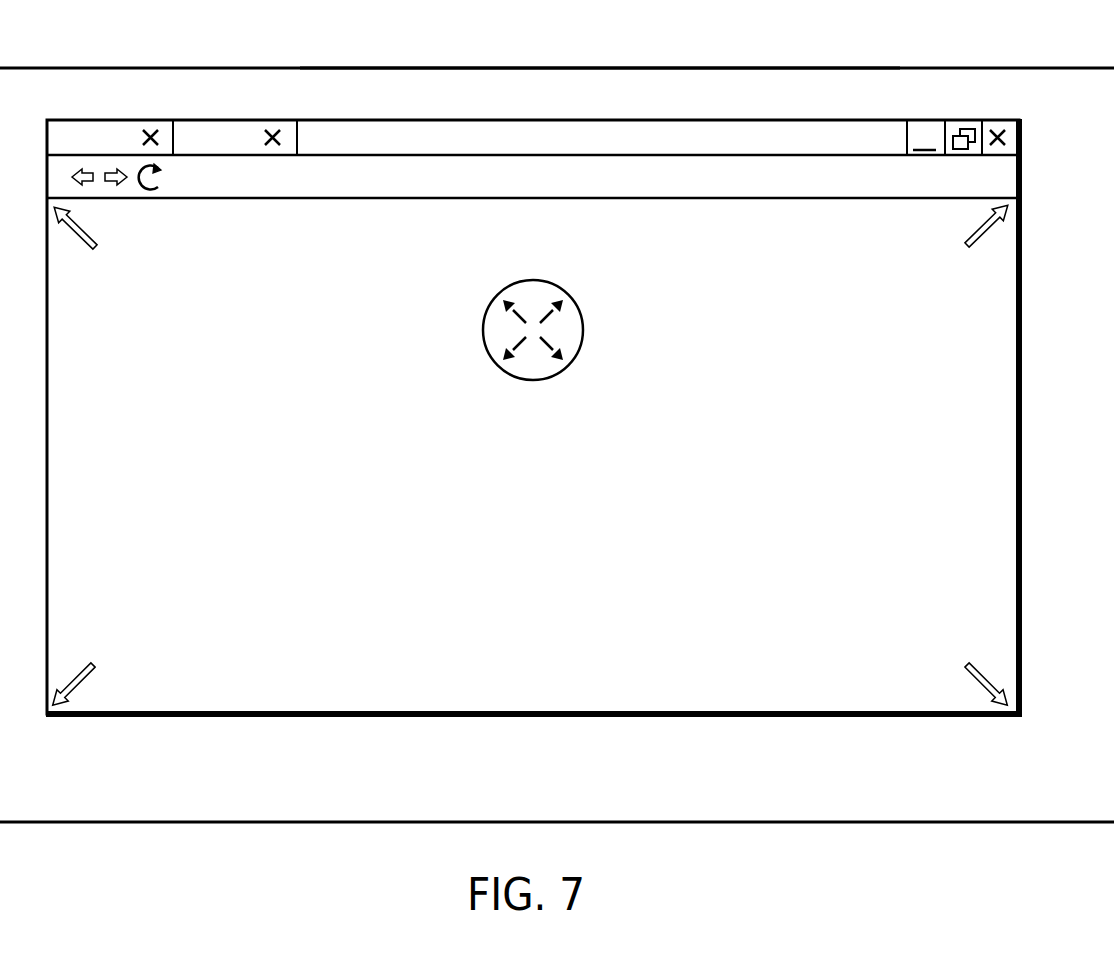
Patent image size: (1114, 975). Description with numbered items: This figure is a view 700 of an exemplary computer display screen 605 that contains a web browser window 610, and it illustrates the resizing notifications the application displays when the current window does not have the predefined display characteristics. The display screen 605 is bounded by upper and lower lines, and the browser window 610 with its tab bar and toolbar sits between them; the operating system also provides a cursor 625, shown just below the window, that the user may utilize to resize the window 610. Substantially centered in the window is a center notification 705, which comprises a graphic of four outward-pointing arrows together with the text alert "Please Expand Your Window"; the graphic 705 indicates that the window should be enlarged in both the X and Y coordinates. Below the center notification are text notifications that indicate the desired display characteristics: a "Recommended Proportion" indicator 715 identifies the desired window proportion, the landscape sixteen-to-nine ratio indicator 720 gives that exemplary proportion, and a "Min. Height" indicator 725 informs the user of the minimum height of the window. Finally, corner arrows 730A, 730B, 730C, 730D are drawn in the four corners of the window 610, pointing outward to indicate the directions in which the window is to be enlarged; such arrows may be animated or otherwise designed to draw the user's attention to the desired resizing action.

The view 700 is at (972, 32).
The display screen 605 is at (618, 66).
The cursor 625 is at (1010, 735).
The web browser window 610 is at (1023, 172).
The center notification 705 is at (536, 281).
The Recommended Proportion indicator 715 is at (414, 517).
The Landscape 16:9 Ratio indicator 720 is at (422, 582).
The Min. Height indicator 725 is at (624, 582).
The corner arrow 730A is at (97, 249).
The corner arrow 730B is at (968, 249).
The corner arrow 730C is at (968, 661).
The corner arrow 730D is at (85, 666).